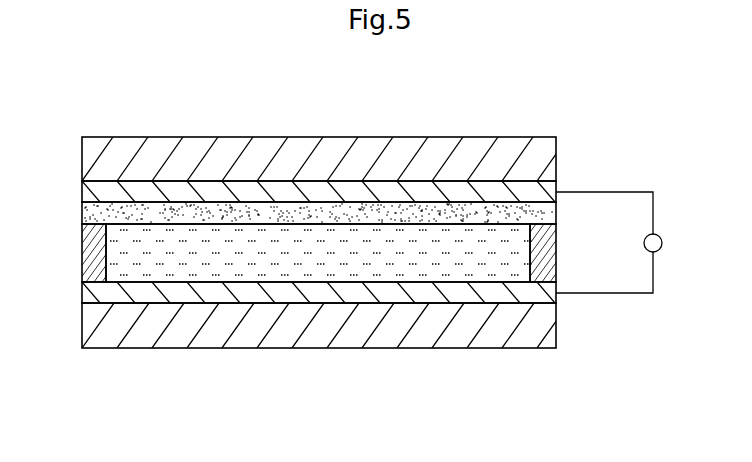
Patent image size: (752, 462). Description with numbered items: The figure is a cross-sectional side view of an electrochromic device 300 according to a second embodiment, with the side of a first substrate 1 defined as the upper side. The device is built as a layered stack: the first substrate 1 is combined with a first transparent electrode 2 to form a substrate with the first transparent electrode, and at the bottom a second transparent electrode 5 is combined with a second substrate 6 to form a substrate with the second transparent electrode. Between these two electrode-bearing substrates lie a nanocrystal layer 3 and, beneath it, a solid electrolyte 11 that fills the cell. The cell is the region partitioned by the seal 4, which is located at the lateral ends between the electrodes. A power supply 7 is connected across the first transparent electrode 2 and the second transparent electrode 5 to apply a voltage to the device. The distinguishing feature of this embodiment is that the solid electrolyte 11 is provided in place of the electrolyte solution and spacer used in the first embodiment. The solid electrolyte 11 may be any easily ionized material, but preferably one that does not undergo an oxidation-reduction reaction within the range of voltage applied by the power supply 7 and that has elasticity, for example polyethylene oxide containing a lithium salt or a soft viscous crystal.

The first substrate 1 is at (551, 157).
The first transparent electrode 2 is at (83, 186).
The nanocrystal layer 3 is at (551, 211).
The seal 4 is at (88, 248).
The second transparent electrode 5 is at (86, 291).
The second substrate 6 is at (551, 327).
The power supply 7 is at (662, 236).
The solid electrolyte 11 is at (453, 253).
The electrochromic device 300 is at (525, 108).